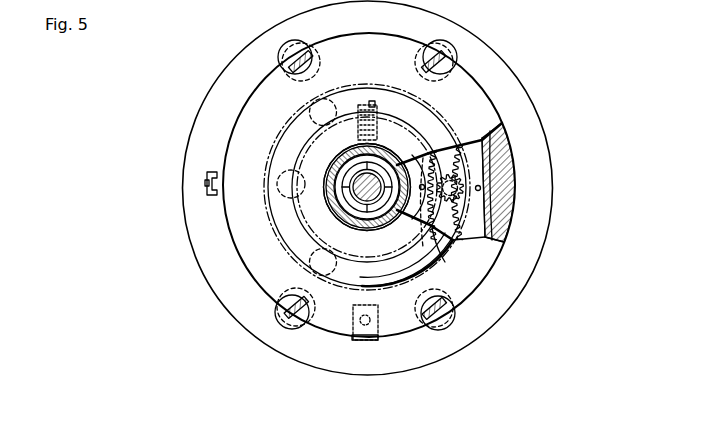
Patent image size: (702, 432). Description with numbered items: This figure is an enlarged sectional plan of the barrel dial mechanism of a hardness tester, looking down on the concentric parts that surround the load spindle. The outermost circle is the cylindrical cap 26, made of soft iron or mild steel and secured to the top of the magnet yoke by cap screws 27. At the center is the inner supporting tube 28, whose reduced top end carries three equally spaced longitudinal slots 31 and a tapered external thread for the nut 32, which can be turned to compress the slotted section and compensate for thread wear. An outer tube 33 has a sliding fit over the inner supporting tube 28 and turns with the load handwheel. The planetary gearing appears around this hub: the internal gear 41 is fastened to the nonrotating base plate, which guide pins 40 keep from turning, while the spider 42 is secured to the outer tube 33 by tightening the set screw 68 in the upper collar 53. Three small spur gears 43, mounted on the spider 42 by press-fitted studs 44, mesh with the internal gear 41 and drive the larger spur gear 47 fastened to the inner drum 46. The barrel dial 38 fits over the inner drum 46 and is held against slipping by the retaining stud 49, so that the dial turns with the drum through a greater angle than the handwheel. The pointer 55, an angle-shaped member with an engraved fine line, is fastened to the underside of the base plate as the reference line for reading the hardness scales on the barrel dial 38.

The cylindrical cap 26 is at (553, 206).
The cap screws 27 is at (452, 55).
The inner supporting tube 28 is at (352, 191).
The longitudinal slots 31 is at (355, 204).
The nut 32 is at (347, 170).
The outer tube 33 is at (360, 148).
The barrel dial 38 is at (505, 240).
The guide pins 40 is at (277, 186).
The internal gear 41 is at (450, 236).
The spider 42 is at (377, 229).
The small spur gears 43 is at (318, 116).
The press-fitted studs 44 is at (462, 183).
The inner drum 46 is at (487, 140).
The spur gear 47 is at (444, 253).
The retaining stud 49 is at (208, 185).
The upper collar 53 is at (386, 262).
The pointer 55 is at (372, 340).
The set screw 68 is at (374, 106).